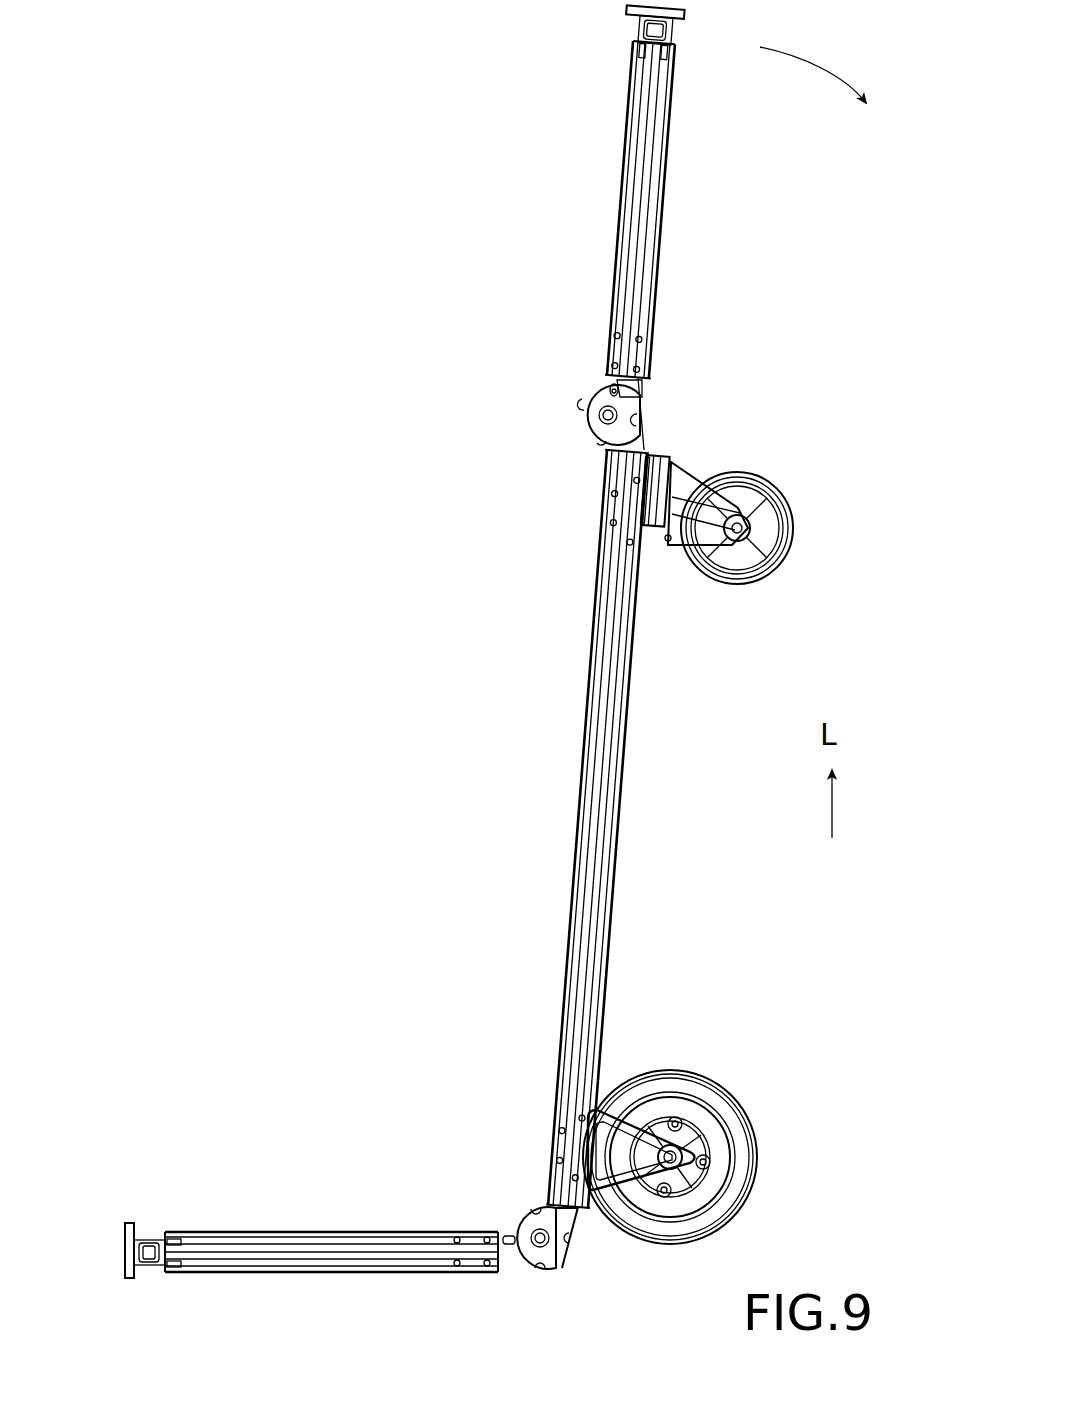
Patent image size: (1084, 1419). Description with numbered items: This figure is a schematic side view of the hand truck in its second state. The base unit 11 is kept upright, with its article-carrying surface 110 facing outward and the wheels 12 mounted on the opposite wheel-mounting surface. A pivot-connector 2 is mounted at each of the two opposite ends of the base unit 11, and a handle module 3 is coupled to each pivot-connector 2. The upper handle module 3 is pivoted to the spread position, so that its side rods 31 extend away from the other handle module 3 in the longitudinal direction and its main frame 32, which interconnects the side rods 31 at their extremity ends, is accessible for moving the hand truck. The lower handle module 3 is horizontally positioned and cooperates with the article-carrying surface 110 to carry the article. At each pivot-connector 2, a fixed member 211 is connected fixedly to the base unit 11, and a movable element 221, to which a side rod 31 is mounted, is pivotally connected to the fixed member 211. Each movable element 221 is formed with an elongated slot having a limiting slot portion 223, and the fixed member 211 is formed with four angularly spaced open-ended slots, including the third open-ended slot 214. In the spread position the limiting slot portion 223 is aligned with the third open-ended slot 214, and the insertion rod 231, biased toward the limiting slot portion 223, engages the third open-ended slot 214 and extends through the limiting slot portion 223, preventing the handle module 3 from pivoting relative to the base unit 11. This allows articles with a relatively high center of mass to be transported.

The pivot-connector 2 is at (574, 374).
The handle module 3 is at (705, 188).
The base unit 11 is at (610, 728).
The wheel 12 is at (735, 1140).
The side rod 31 is at (665, 88).
The main frame 32 is at (665, 30).
The article-carrying surface 110 is at (583, 778).
The fixed member 211 is at (645, 432).
The third open-ended slot 214 is at (640, 398).
The movable element 221 is at (636, 384).
The limiting slot portion 223 is at (588, 395).
The insertion rod 231 is at (607, 385).